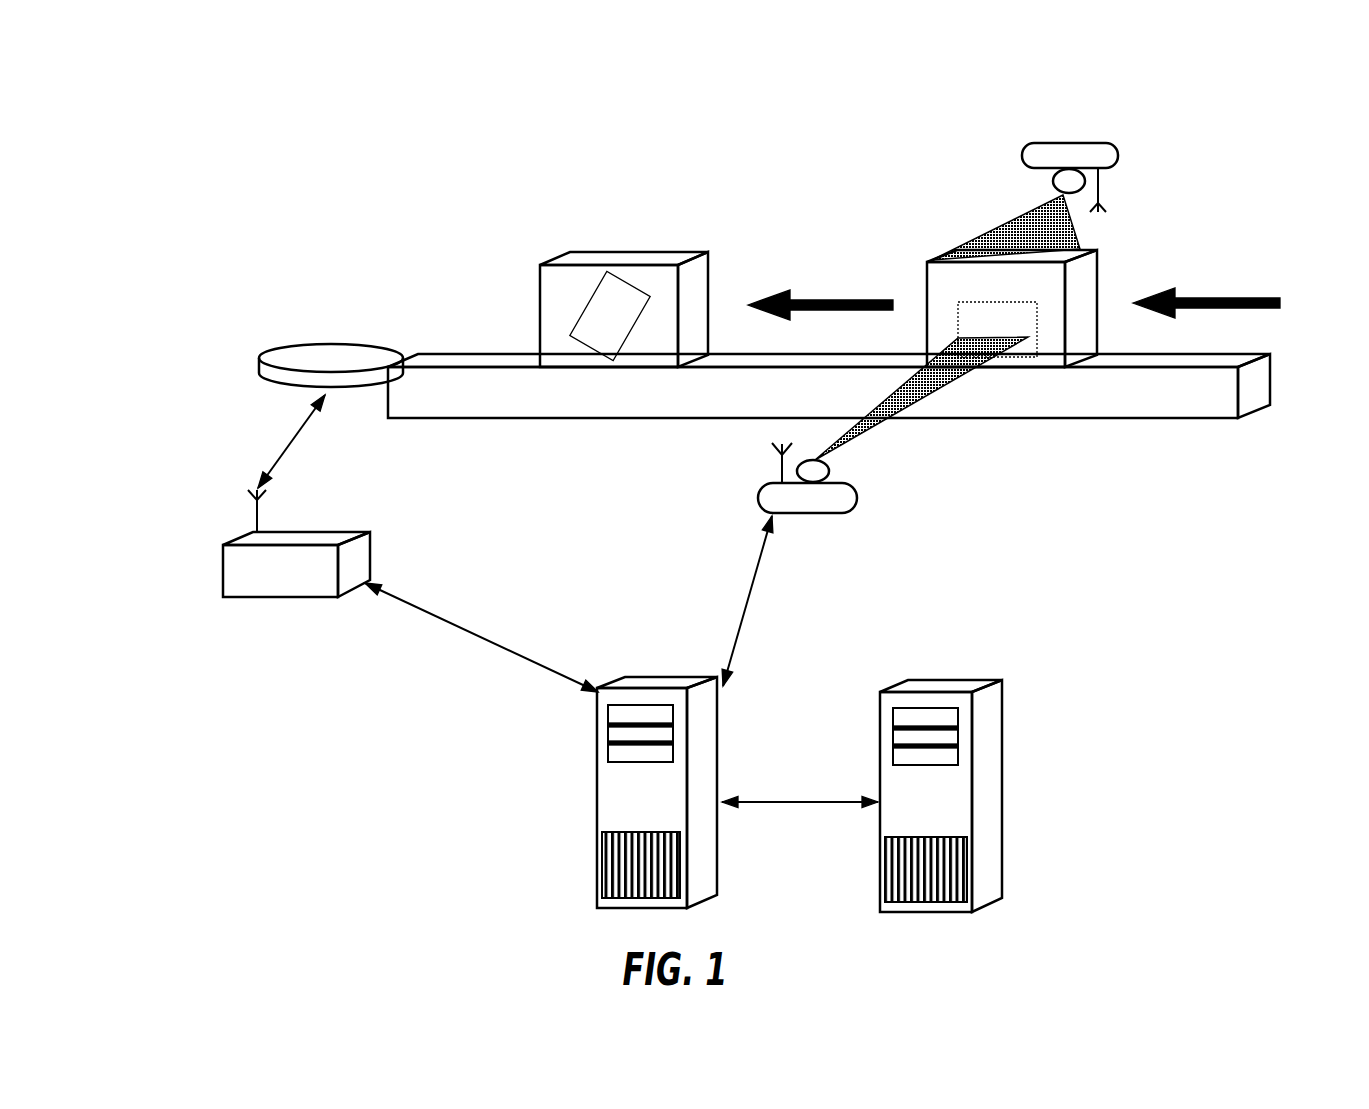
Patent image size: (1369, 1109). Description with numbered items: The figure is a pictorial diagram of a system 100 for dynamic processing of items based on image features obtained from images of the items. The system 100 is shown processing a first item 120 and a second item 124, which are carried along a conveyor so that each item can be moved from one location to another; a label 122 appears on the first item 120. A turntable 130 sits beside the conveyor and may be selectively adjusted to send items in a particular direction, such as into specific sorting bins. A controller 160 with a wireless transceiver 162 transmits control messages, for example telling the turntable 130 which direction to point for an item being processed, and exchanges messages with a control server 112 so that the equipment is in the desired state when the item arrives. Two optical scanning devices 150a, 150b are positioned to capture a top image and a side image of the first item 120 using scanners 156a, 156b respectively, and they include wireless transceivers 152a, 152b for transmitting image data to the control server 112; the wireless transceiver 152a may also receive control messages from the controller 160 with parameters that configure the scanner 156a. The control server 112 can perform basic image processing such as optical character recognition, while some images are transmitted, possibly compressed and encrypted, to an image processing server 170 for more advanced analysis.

The system 100 is at (156, 140).
The control server 112 is at (658, 683).
The first item 120 is at (928, 262).
The shipping label 122 is at (1022, 303).
The second item 124 is at (632, 265).
The turntable 130 is at (330, 345).
The optical scanning device 150a is at (1126, 140).
The optical scanning device 150b is at (862, 533).
The wireless transceiver 152a is at (1105, 192).
The wireless transceiver 152b is at (782, 470).
The scanner 156a is at (1052, 180).
The scanner 156b is at (830, 473).
The controller 160 is at (223, 556).
The wireless transceiver 162 is at (253, 527).
The image processing server 170 is at (943, 685).